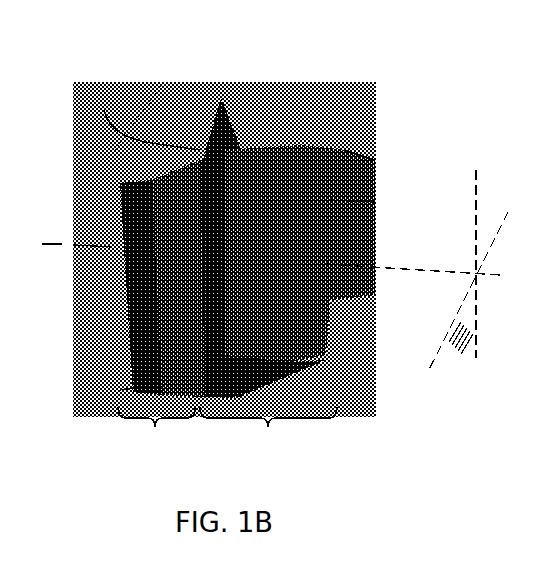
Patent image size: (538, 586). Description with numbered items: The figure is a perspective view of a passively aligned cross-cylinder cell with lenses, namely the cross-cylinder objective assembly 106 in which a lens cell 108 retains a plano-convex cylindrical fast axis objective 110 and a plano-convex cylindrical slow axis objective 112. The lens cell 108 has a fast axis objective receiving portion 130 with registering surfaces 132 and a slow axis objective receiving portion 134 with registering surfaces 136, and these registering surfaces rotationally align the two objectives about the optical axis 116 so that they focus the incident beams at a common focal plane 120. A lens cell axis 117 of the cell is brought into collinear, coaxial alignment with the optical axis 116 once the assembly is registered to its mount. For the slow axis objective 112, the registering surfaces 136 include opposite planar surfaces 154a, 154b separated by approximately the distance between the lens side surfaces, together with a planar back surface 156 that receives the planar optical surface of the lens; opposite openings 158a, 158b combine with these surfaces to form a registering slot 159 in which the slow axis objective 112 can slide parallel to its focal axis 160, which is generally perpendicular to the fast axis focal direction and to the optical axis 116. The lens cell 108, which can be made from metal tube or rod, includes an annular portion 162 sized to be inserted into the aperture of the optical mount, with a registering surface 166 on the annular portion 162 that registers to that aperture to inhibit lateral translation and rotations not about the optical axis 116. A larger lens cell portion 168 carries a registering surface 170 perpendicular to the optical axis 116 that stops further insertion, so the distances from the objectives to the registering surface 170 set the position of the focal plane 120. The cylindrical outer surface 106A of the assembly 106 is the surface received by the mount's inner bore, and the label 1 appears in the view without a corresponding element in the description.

The bone plate system / central axis 1 is at (498, 230).
The cross-cylinder objective assembly 106 is at (256, 64).
The outer surface 106A is at (222, 398).
The lens cell 108 is at (163, 83).
The fast axis objective 110 is at (100, 262).
The slow axis objective 112 is at (306, 158).
The optical axis 116 is at (72, 245).
The lens cell axis 117 is at (57, 243).
The focal plane 120 is at (458, 360).
The fast axis objective receiving portion 130 is at (110, 184).
The registering surfaces 132 is at (135, 385).
The slow axis objective receiving portion 134 is at (260, 152).
The registering surfaces 136 is at (288, 150).
The planar surface 154a is at (375, 203).
The planar surface 154b is at (375, 158).
The planar back surface 156 is at (245, 150).
The opening 158a is at (221, 68).
The opening 158b is at (288, 372).
The registering slot 159 is at (303, 158).
The focal axis 160 is at (476, 180).
The annular portion 162 is at (268, 429).
The registering surface 166 is at (202, 298).
The larger lens cell portion 168 is at (156, 432).
The registering surface 170 is at (138, 117).